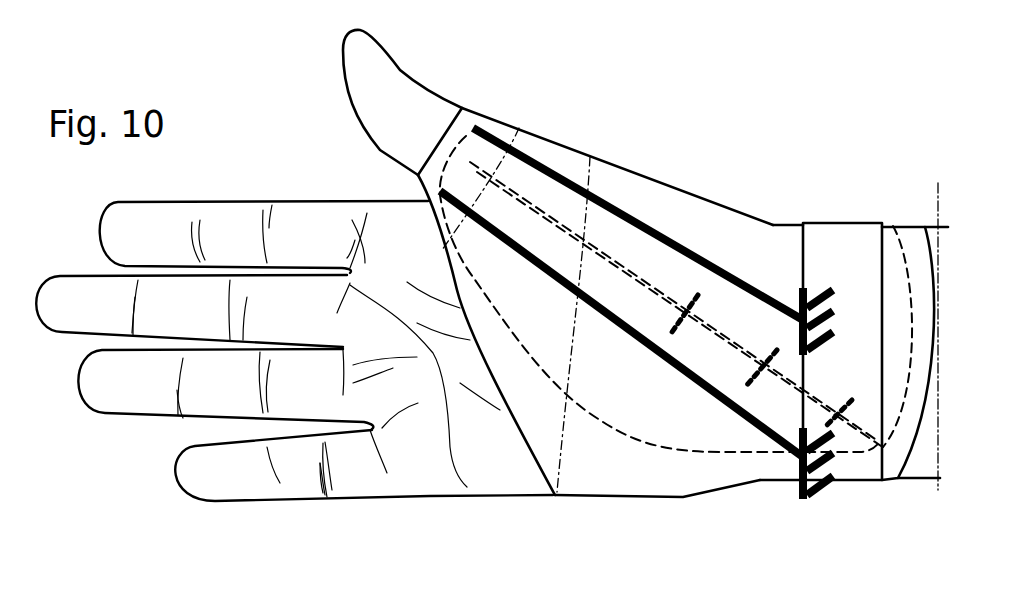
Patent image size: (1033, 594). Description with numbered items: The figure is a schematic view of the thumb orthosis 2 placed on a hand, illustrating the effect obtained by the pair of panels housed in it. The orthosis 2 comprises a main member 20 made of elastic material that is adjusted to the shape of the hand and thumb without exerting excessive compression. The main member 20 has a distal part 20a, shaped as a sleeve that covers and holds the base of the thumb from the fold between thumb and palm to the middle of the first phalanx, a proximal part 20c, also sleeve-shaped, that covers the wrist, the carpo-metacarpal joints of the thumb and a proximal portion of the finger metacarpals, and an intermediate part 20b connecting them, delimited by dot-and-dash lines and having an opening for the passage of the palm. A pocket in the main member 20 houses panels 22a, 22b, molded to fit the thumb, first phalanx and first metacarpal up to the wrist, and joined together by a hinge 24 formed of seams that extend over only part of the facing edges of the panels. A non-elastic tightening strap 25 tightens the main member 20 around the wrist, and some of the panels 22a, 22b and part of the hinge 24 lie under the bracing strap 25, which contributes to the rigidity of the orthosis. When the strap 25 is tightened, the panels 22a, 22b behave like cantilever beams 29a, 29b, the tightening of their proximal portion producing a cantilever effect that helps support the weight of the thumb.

The thumb orthosis 2 is at (727, 154).
The main member 20 is at (650, 177).
The distal part 20a is at (512, 132).
The intermediate part 20b is at (530, 148).
The proximal part 20c is at (783, 240).
The panel 22a is at (477, 120).
The panel 22b is at (602, 410).
The hinge 24 is at (673, 333).
The tightening strap 25 is at (868, 475).
The cantilever beam 29a is at (727, 268).
The cantilever beam 29b is at (737, 380).